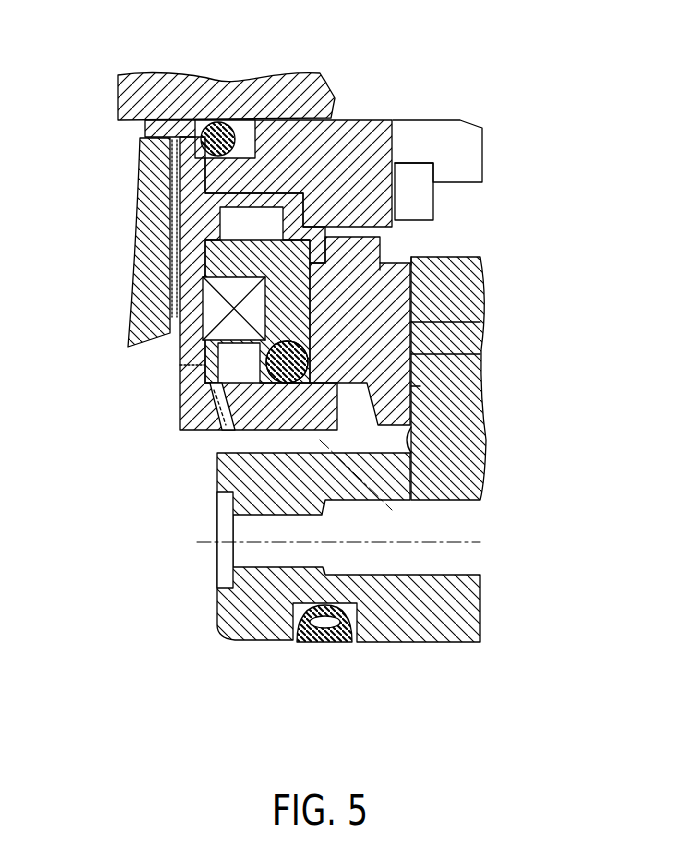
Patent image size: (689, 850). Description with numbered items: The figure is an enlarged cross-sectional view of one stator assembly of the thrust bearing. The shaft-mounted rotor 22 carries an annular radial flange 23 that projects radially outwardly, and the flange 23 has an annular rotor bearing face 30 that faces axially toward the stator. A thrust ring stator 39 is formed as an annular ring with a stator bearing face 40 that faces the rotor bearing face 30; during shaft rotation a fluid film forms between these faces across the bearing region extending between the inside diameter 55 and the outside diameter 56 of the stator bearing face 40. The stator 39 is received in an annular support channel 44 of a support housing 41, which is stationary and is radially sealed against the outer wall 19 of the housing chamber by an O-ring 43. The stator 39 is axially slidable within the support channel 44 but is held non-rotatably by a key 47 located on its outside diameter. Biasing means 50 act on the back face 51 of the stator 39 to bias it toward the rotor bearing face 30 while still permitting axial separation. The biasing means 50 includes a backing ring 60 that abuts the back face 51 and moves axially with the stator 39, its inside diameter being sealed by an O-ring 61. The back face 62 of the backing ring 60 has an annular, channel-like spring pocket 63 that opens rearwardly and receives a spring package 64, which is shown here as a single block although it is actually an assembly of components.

The outer wall 19 is at (270, 72).
The rotor 22 is at (422, 645).
The annular radial flange 23 is at (476, 279).
The rotor bearing face 30 is at (411, 257).
The thrust ring stator 39 is at (390, 353).
The stator bearing face 40 is at (415, 386).
The support housing 41 is at (375, 122).
The O-ring 43 is at (215, 118).
The support channel 44 is at (198, 378).
The key 47 is at (345, 230).
The biasing means 50 is at (197, 357).
The back face 51 is at (310, 305).
The inside diameter 55 is at (403, 450).
The outside diameter 56 is at (385, 273).
The backing ring 60 is at (242, 248).
The O-ring 61 is at (258, 428).
The back face 62 is at (178, 390).
The spring pocket 63 is at (198, 238).
The spring package 64 is at (197, 306).